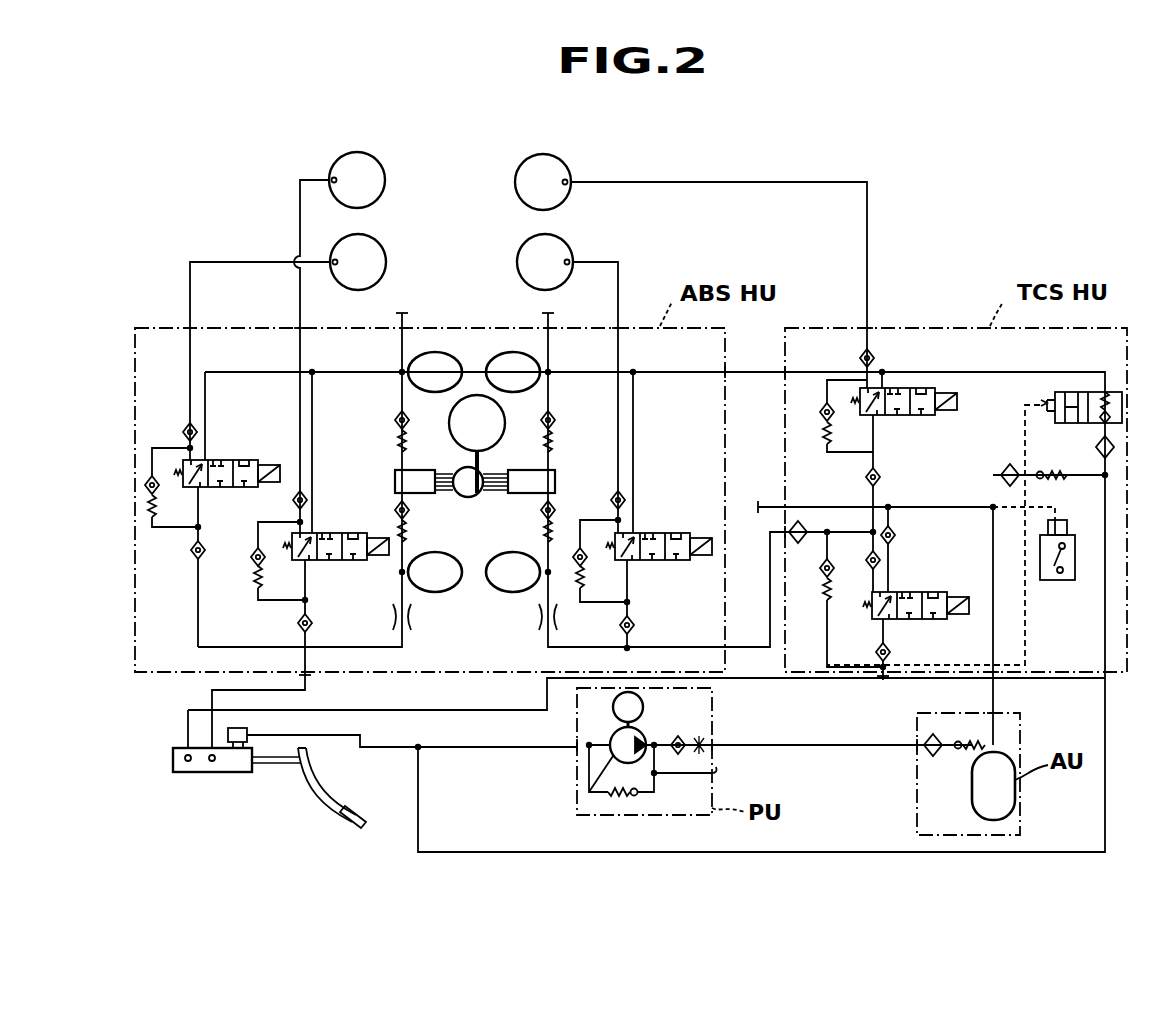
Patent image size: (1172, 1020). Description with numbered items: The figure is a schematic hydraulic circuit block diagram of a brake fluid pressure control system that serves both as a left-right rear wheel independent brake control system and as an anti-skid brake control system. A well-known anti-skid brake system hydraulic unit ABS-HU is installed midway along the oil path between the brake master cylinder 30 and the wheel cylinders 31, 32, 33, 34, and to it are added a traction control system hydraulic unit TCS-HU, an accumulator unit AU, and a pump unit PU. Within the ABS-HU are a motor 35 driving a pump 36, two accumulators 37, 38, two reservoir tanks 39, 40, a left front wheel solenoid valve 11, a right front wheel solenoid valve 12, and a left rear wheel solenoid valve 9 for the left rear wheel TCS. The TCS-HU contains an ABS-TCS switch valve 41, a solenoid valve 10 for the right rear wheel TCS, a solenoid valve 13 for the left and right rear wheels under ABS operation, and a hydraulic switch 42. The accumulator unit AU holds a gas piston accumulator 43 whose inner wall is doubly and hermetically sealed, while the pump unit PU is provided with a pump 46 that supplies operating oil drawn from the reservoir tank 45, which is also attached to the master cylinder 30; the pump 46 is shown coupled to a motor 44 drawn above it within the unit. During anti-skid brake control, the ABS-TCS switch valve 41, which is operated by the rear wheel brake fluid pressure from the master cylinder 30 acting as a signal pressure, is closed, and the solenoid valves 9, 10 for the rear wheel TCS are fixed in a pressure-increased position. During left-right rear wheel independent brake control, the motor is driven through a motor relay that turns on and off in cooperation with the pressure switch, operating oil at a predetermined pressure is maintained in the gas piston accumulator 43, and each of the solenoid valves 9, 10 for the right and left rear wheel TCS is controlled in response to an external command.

The left rear wheel solenoid valve 9 is at (668, 533).
The solenoid valve for the right rear wheel TCS 10 is at (920, 415).
The left front wheel solenoid valve 11 is at (232, 460).
The right front wheel solenoid valve 12 is at (335, 533).
The solenoid valve for the left and right rear wheel (ABS) 13 is at (935, 592).
The brake master cylinder 30 is at (213, 775).
The wheel cylinder 31 is at (386, 250).
The wheel cylinder 32 is at (386, 166).
The wheel cylinder 33 is at (518, 254).
The wheel cylinder 34 is at (517, 170).
The motor 35 is at (477, 395).
The pump 36 is at (450, 495).
The accumulator 37 is at (440, 592).
The accumulator 38 is at (510, 592).
The reservoir tank 39 is at (430, 352).
The reservoir tank 40 is at (508, 352).
The ABS-TCS switch valve 41 is at (1055, 392).
The hydraulic switch 42 is at (1057, 580).
The gas piston accumulator 43 is at (1013, 808).
The pump motor 44 is at (645, 712).
The reservoir tank 45 is at (247, 730).
The pump 46 is at (577, 790).